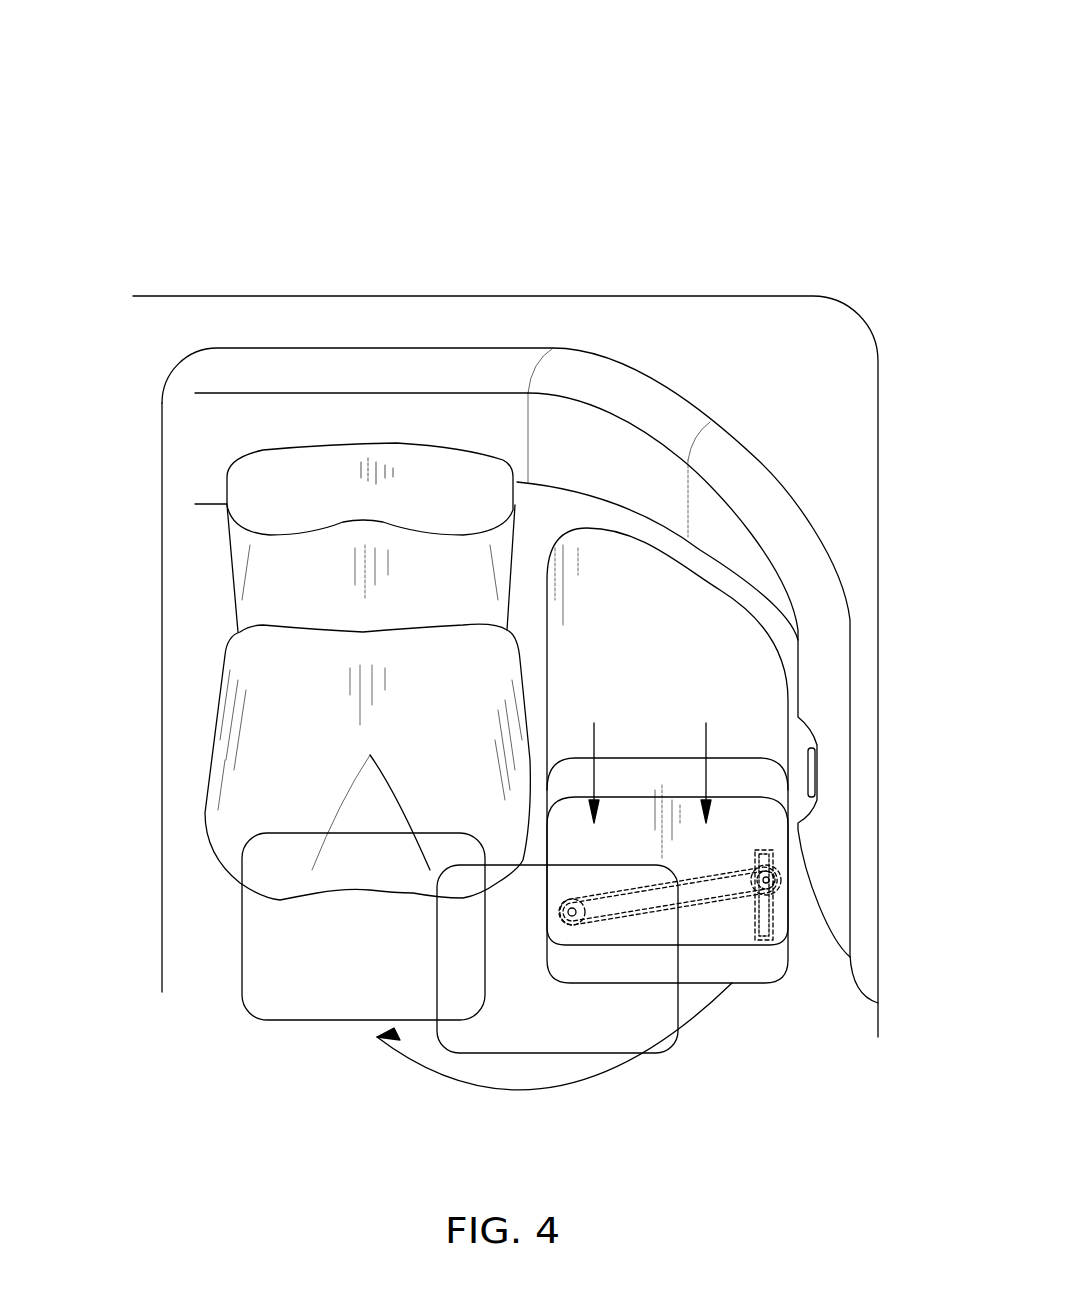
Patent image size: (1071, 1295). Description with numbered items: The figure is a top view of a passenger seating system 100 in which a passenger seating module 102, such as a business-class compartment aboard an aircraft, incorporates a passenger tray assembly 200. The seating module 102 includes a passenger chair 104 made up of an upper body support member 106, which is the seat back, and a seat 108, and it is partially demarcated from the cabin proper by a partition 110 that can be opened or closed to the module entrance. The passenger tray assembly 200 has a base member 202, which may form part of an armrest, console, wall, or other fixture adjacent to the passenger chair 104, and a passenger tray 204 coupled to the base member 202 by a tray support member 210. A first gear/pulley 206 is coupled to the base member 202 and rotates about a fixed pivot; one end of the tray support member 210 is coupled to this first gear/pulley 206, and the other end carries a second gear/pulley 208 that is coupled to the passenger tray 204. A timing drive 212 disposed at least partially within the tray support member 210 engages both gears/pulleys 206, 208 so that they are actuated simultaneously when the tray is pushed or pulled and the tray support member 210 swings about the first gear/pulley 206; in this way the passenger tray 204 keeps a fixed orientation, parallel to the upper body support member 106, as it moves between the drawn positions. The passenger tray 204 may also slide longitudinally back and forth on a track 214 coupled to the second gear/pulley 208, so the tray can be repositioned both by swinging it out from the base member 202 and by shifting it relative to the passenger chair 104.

The passenger seating system 100 is at (180, 132).
The passenger seating module 102 is at (673, 398).
The passenger chair 104 is at (422, 445).
The upper body support member 106 is at (247, 548).
The seat 108 is at (252, 752).
The partition 110 is at (162, 703).
The passenger tray assembly 200 is at (760, 955).
The base member 202 is at (758, 650).
The passenger tray 204 is at (762, 772).
The first gear/pulley 206 is at (572, 927).
The second gear/pulley 208 is at (779, 878).
The tray support member 210 is at (722, 870).
The timing drive 212 is at (692, 875).
The track 214 is at (774, 912).